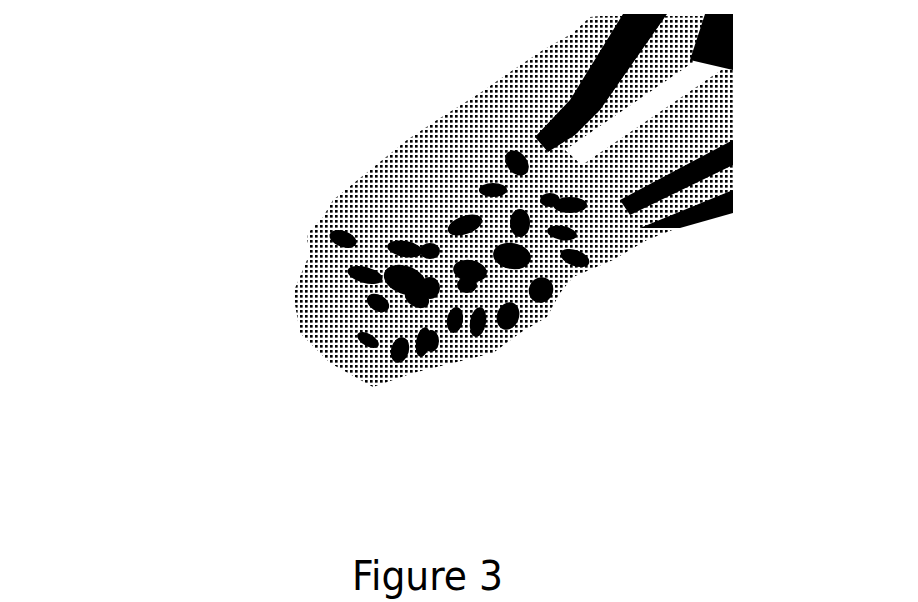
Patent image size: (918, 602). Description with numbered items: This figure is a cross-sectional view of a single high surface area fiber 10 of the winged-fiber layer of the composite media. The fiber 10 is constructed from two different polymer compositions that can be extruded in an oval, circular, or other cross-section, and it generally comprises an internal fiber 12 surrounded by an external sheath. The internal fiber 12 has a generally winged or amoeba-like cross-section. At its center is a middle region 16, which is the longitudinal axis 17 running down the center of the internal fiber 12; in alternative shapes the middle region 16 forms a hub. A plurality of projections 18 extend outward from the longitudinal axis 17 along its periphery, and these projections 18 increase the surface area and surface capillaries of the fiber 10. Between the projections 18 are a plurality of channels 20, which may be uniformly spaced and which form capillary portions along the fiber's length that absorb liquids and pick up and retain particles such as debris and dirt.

The fiber 10 is at (610, 160).
The internal fiber 12 is at (537, 307).
The middle region 16 is at (337, 370).
The longitudinal axis 17 is at (347, 292).
The projections 18 is at (310, 245).
The channels 20 is at (560, 257).